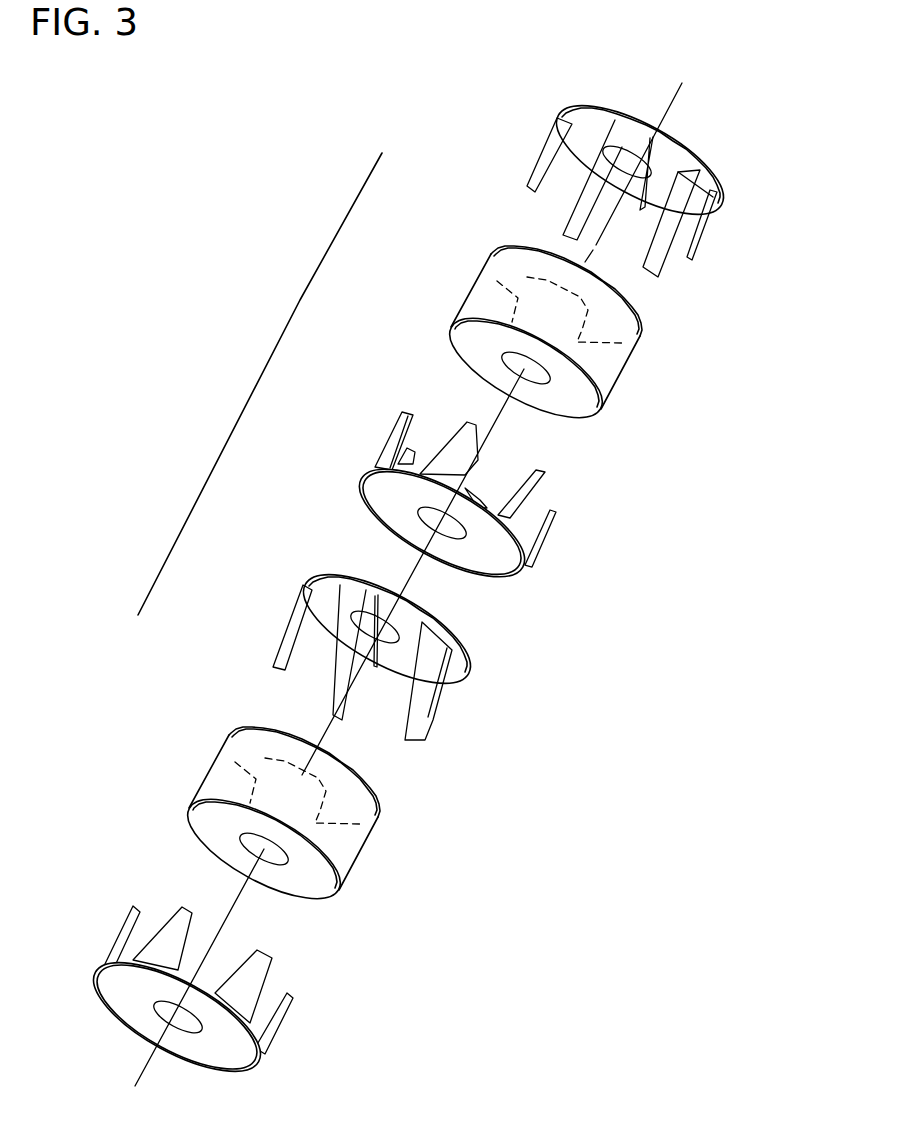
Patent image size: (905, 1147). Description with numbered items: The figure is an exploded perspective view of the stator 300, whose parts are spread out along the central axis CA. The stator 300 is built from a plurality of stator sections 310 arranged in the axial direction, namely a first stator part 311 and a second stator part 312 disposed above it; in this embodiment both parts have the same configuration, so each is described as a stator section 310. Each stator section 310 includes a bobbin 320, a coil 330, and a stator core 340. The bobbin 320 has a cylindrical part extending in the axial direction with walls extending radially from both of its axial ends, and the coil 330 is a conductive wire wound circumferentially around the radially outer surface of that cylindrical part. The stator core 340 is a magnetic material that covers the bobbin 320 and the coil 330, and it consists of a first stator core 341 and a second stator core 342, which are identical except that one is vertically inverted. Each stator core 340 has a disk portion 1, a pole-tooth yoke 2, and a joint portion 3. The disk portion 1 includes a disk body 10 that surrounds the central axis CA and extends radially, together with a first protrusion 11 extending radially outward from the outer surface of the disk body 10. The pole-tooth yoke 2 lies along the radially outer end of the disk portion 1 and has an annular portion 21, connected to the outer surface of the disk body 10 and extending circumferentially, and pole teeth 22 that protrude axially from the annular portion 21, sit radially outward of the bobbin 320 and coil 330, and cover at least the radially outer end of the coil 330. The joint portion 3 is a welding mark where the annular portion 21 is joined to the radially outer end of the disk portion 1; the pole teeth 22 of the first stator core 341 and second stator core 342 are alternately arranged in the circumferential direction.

The stator 300 is at (208, 166).
The stator section 310 is at (260, 384).
The first stator part 311 is at (207, 675).
The second stator part 312 is at (433, 238).
The bobbin 320 is at (470, 345).
The coil 330 is at (604, 362).
The stator core 340 is at (785, 280).
The first stator core 341 is at (557, 466).
The second stator core 342 is at (683, 281).
The disk portion 1 is at (305, 432).
The disk body 10 is at (380, 492).
The first protrusion 11 is at (372, 465).
The pole-tooth yoke 2 is at (617, 525).
The annular portion 21 is at (522, 566).
The pole teeth 22 is at (549, 484).
The joint portion 3 is at (372, 508).
The central axis CA is at (667, 108).